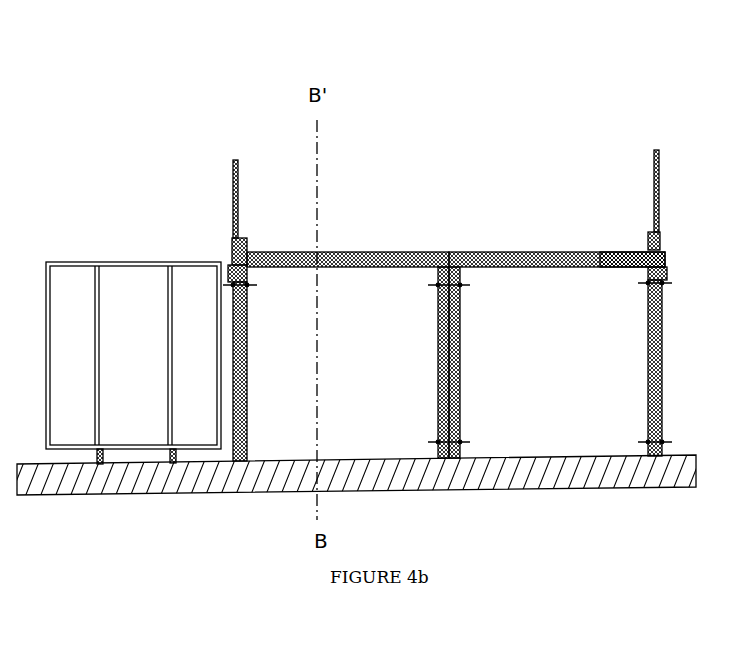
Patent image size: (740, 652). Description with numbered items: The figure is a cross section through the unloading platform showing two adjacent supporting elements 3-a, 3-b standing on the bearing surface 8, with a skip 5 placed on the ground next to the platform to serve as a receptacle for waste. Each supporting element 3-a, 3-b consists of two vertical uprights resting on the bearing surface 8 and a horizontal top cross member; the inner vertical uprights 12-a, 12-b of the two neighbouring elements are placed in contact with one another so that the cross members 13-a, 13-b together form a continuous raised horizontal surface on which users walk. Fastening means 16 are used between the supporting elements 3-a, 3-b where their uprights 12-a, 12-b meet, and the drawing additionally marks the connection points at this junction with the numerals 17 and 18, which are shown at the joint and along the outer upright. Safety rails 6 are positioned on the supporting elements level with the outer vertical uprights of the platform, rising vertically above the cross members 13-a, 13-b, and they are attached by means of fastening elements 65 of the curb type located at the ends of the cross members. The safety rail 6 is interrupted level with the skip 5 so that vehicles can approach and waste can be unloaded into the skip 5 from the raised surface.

The skip 5 is at (78, 298).
The safety rail 6 is at (229, 158).
The bearing surface 8 is at (185, 482).
The fastening element 65 is at (232, 248).
The supporting element 3-a is at (281, 251).
The supporting element 3-b is at (627, 250).
The cross member 13-a is at (356, 251).
The cross member 13-b is at (573, 251).
The vertical upright 12-a is at (437, 322).
The vertical upright 12-b is at (463, 333).
The fastening means 16 is at (458, 284).
The lower clamp 17 is at (465, 428).
The right post 18 is at (665, 376).